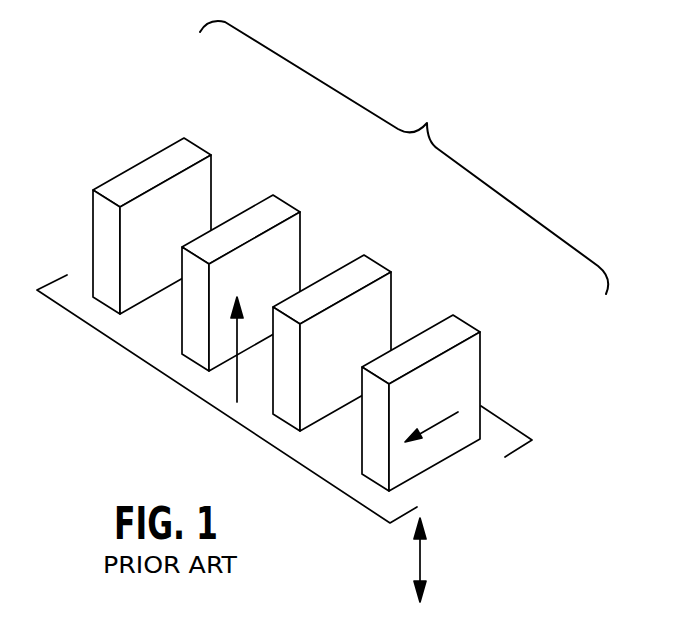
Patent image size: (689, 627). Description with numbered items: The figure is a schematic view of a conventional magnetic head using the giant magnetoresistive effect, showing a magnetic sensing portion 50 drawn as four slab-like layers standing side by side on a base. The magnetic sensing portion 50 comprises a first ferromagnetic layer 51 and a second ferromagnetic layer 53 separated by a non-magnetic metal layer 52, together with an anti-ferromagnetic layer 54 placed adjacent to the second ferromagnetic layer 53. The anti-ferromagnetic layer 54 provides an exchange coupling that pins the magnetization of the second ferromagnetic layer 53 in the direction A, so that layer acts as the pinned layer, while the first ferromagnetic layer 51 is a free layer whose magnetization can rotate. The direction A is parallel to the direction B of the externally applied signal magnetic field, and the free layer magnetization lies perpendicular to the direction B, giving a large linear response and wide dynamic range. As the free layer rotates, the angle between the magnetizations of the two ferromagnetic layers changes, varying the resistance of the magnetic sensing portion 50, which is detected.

The magnetic sensing portion 50 is at (404, 157).
The first ferromagnetic layer 51 is at (456, 324).
The non-magnetic metal layer 52 is at (367, 269).
The second ferromagnetic layer 53 is at (265, 199).
The anti-ferromagnetic layer 54 is at (187, 152).
The direction A is at (237, 390).
The direction B is at (420, 548).